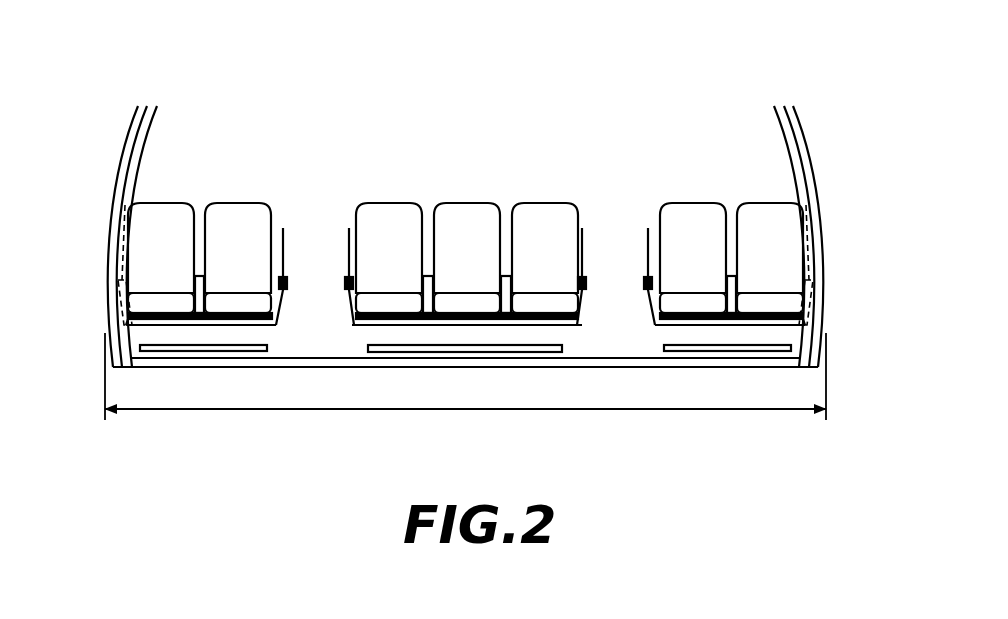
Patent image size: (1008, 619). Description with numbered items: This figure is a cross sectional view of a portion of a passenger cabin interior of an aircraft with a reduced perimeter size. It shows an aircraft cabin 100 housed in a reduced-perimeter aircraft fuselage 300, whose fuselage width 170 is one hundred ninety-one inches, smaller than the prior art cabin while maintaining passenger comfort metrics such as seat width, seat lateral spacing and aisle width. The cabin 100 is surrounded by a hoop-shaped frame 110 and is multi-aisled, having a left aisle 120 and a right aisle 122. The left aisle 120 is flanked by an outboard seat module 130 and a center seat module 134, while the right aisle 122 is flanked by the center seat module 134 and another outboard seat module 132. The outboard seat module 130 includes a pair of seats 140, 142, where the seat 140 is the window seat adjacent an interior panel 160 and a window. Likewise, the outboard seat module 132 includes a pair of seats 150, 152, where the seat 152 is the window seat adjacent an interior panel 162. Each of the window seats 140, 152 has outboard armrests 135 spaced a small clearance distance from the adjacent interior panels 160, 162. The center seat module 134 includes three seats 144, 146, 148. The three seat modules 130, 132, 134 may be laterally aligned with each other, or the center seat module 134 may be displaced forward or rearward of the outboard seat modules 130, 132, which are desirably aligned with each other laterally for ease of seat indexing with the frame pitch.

The aircraft cabin 100 is at (684, 64).
The hoop-shaped frame 110 is at (122, 155).
The left aisle 120 is at (332, 293).
The right aisle 122 is at (629, 293).
The outboard seat module 130 is at (226, 231).
The outboard seat module 132 is at (705, 231).
The center seat module 134 is at (467, 232).
The outboard armrest 135 is at (113, 283).
The seat 140 is at (176, 259).
The seat 142 is at (253, 259).
The seat 144 is at (404, 259).
The seat 146 is at (482, 259).
The seat 148 is at (560, 259).
The seat 150 is at (708, 259).
The seat 152 is at (785, 259).
The interior panel 160 is at (139, 196).
The interior panel 162 is at (797, 198).
The fuselage width 170 is at (466, 411).
The aircraft fuselage 300 is at (829, 236).